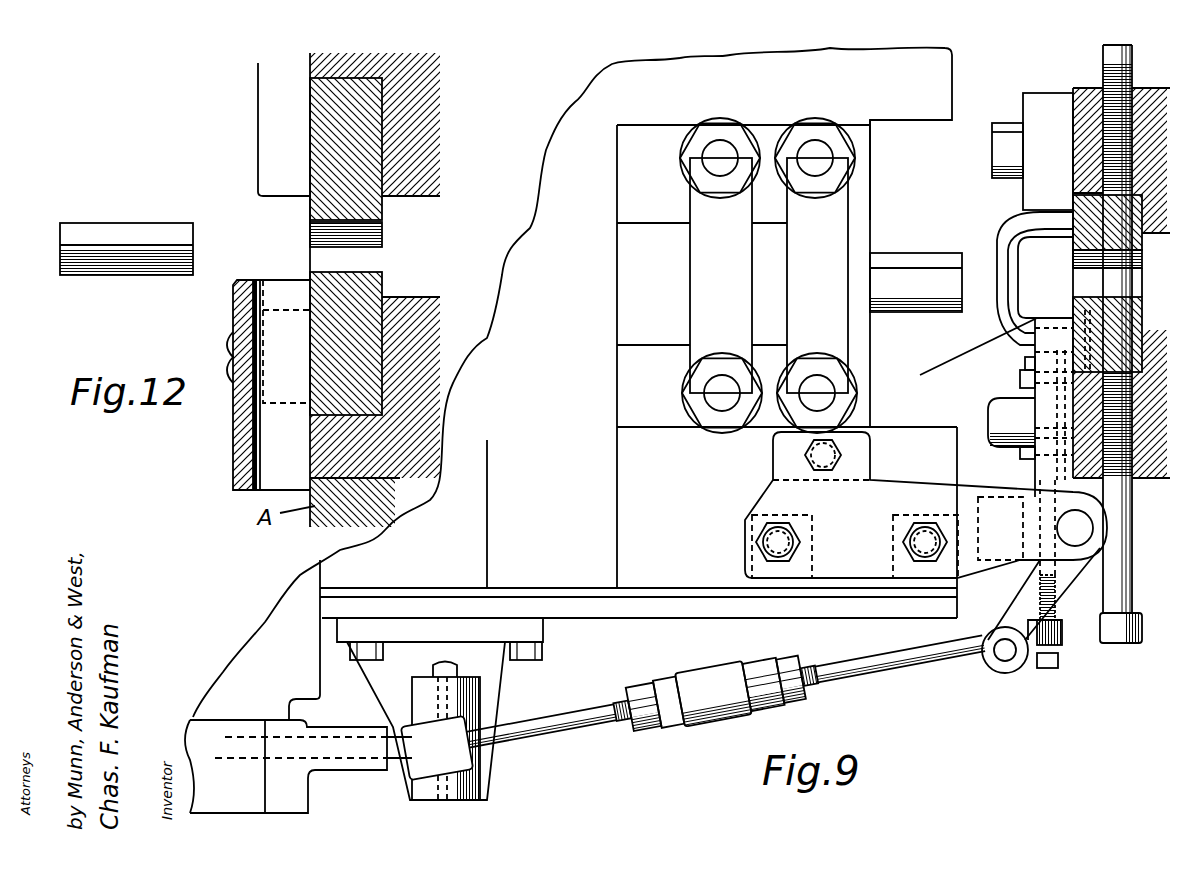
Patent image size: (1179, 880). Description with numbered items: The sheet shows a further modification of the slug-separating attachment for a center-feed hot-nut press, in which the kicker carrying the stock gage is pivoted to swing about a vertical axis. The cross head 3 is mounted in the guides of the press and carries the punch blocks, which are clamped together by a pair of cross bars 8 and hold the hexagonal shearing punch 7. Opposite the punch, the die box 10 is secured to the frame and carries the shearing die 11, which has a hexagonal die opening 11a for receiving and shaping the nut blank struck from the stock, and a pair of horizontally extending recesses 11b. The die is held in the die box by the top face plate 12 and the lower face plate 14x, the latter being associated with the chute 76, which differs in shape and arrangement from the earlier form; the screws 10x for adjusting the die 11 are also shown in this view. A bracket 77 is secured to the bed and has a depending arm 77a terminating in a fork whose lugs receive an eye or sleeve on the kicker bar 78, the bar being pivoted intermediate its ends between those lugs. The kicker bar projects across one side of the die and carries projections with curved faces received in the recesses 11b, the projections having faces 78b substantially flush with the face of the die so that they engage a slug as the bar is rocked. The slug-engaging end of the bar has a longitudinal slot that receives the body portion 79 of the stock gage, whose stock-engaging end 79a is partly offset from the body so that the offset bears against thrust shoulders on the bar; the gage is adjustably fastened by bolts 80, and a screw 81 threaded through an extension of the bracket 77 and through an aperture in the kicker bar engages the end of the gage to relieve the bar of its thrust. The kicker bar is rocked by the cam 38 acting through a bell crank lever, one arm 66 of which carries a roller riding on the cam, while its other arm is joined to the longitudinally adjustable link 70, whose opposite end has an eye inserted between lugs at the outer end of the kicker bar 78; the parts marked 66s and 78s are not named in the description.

In FIG. 9, the cross head 3 is at (787, 354).
In FIG. 12, the shearing punch 7 is at (148, 232).
In FIG. 9, the shearing punch 7 is at (905, 266).
In FIG. 9, the cross bars 8 is at (769, 275).
In FIG. 12, the die box 10 is at (410, 139).
In FIG. 9, the die box 10 is at (1088, 100).
In FIG. 9, the screws 10x is at (1110, 80).
In FIG. 12, the shearing die 11 is at (370, 296).
In FIG. 9, the shearing die 11 is at (1078, 241).
In FIG. 12, the hexagonal die opening 11a is at (384, 231).
In FIG. 9, the hexagonal die opening 11a is at (1140, 277).
In FIG. 9, the horizontally extending recesses 11b is at (1090, 328).
In FIG. 12, the top face plate 12 is at (257, 154).
In FIG. 12, the lower face plate 14x is at (237, 469).
In FIG. 9, the cam 38 is at (350, 733).
In FIG. 9, the arm of bell crank lever 66 is at (345, 770).
In FIG. 9, the pivot stud 66s is at (423, 783).
In FIG. 9, the link 70 is at (881, 663).
In FIG. 12, the chute 76 is at (280, 432).
In FIG. 9, the chute 76 is at (1000, 292).
In FIG. 9, the bracket 77 is at (926, 505).
In FIG. 9, the depending arm 77a is at (998, 507).
In FIG. 9, the kicker bar 78 is at (1032, 452).
In FIG. 9, the faces of the projections 78b is at (1072, 318).
In FIG. 9, the pivot link 78s is at (1010, 667).
In FIG. 9, the body portion of the stock gage 79 is at (1030, 362).
In FIG. 9, the stock-engaging end of the stock gage 79a is at (1040, 315).
In FIG. 9, the bolts 80 is at (1020, 382).
In FIG. 9, the screw 81 is at (1040, 572).